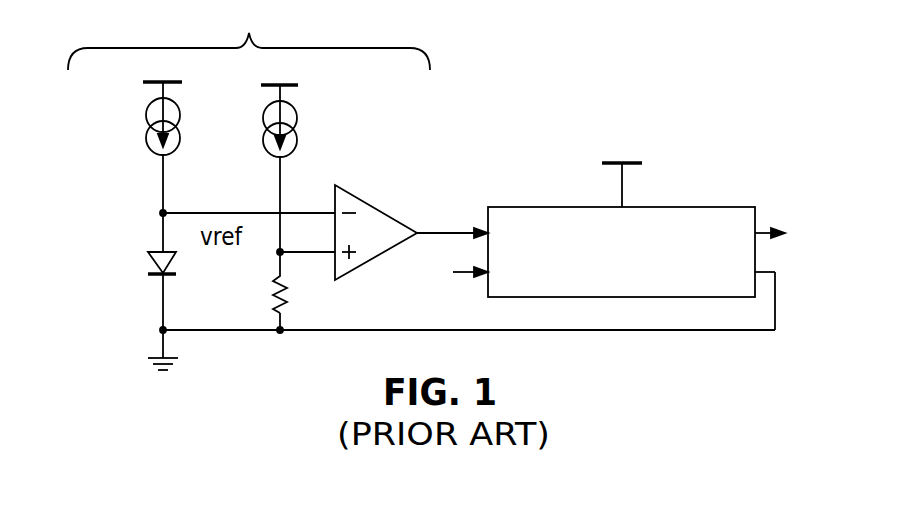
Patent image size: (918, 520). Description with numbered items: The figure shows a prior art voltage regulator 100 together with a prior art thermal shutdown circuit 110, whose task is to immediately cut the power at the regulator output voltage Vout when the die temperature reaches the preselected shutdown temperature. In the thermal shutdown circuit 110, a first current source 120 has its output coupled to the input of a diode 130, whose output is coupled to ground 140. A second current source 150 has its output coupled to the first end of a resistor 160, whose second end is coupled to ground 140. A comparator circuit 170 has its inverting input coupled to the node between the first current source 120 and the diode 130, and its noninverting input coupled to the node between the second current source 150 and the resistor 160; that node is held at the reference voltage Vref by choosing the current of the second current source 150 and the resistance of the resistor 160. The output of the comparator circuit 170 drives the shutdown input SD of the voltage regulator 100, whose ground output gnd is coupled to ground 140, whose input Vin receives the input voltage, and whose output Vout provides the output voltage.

The voltage regulator 100 is at (665, 206).
The thermal shutdown circuit 110 is at (249, 37).
The first current source 120 is at (145, 118).
The diode 130 is at (148, 256).
The ground 140 is at (160, 347).
The second current source 150 is at (298, 118).
The resistor 160 is at (290, 293).
The comparator circuit 170 is at (383, 210).